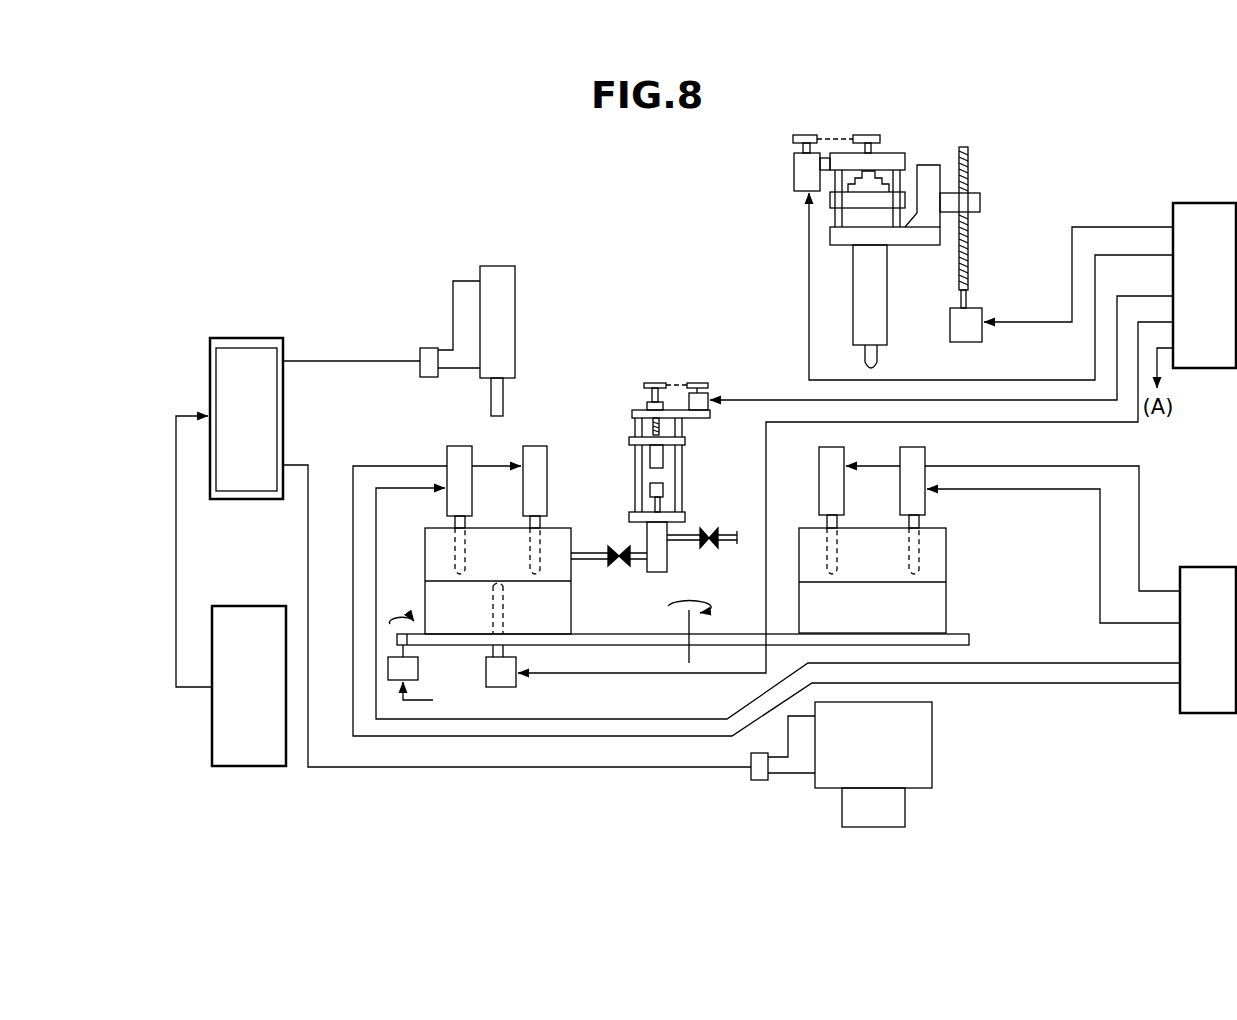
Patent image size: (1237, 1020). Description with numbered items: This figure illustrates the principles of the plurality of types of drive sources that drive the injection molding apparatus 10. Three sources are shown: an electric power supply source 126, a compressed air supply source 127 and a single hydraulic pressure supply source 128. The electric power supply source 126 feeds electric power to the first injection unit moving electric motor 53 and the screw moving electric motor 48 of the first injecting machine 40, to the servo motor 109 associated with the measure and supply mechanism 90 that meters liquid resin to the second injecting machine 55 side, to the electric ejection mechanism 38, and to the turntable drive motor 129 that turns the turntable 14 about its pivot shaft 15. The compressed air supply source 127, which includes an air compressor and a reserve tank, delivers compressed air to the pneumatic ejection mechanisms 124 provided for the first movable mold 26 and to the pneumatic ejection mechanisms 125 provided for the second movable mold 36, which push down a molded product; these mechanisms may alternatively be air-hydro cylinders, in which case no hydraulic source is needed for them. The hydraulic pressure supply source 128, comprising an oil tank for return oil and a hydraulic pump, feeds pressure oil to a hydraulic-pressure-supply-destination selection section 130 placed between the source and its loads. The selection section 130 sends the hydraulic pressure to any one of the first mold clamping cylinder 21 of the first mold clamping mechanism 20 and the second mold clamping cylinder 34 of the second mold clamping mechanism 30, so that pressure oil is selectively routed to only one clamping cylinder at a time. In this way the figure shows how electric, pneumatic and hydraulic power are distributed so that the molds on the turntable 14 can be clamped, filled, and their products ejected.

The injection molding apparatus 10 is at (418, 156).
The turntable 14 is at (637, 637).
The pivot shaft 15 is at (703, 615).
The first mold clamping mechanism 20 is at (884, 765).
The first mold clamping cylinder 21 is at (925, 737).
The first movable mold 26 is at (935, 553).
The second mold clamping mechanism 30 is at (510, 316).
The second mold clamping cylinder 34 is at (515, 313).
The second movable mold 36 is at (430, 553).
The electric ejection mechanism 38 is at (518, 685).
The first injecting machine 40 is at (892, 234).
The screw moving electric motor 48 is at (800, 170).
The first injection unit moving electric motor 53 is at (985, 335).
The second injecting machine 55 is at (597, 546).
The measure and supply mechanism 90 is at (703, 458).
The servo motor 109 is at (708, 392).
The pneumatic ejection mechanisms 124 is at (905, 455).
The pneumatic ejection mechanisms 125 is at (535, 446).
The electric power supply source 126 is at (1207, 203).
The compressed air supply source 127 is at (1210, 567).
The hydraulic pressure supply source 128 is at (250, 766).
The turntable drive motor 129 is at (418, 668).
The hydraulic-pressure-supply-destination selection section 130 is at (247, 480).